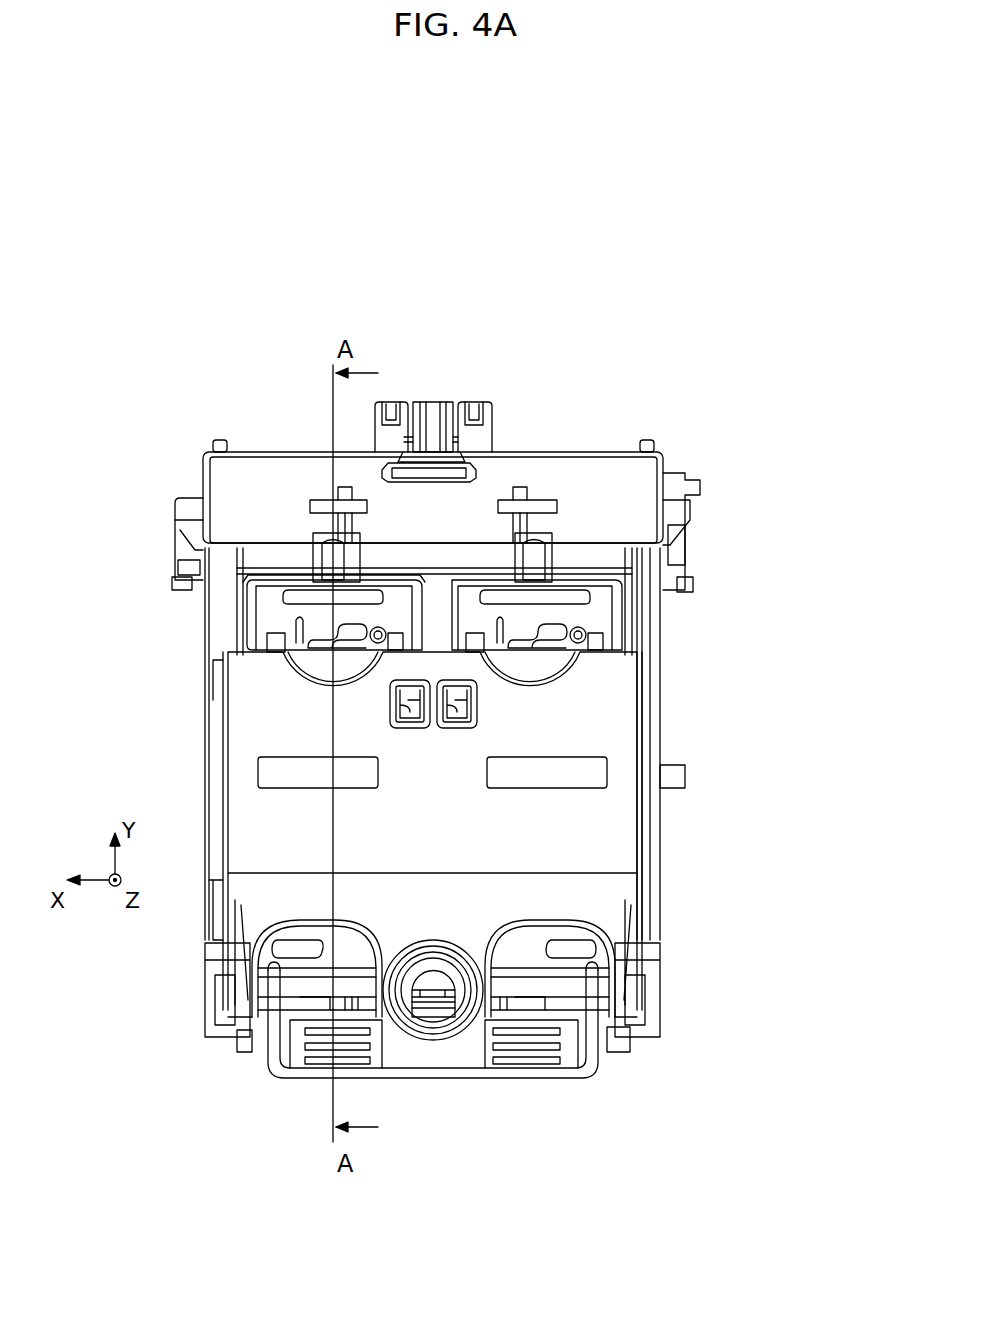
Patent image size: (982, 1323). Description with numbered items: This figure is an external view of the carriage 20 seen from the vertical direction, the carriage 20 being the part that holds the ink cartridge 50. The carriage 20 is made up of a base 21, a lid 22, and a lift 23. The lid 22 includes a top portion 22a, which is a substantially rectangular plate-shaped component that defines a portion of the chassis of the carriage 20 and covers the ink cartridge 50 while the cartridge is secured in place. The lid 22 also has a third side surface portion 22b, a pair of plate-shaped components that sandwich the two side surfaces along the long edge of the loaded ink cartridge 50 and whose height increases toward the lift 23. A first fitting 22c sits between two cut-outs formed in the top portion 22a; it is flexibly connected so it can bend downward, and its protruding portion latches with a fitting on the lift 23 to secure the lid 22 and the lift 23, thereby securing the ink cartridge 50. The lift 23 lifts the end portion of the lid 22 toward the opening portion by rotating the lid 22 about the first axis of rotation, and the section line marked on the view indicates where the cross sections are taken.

The carriage 20 is at (845, 493).
The base 21 is at (590, 580).
The lid 22 is at (785, 608).
The top portion 22a is at (577, 717).
The third side surface portion 22b is at (638, 635).
The first fitting 22c is at (433, 977).
The lift 23 is at (600, 1065).
The ink cartridge 50 is at (275, 615).